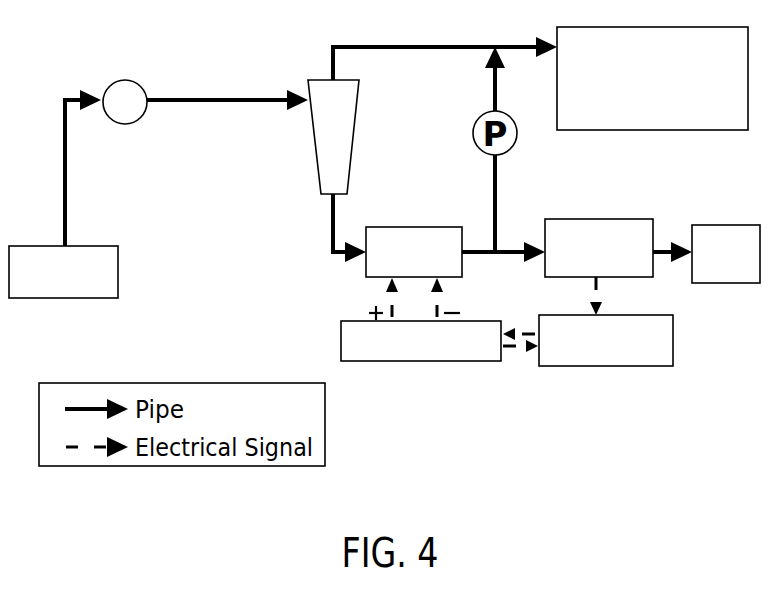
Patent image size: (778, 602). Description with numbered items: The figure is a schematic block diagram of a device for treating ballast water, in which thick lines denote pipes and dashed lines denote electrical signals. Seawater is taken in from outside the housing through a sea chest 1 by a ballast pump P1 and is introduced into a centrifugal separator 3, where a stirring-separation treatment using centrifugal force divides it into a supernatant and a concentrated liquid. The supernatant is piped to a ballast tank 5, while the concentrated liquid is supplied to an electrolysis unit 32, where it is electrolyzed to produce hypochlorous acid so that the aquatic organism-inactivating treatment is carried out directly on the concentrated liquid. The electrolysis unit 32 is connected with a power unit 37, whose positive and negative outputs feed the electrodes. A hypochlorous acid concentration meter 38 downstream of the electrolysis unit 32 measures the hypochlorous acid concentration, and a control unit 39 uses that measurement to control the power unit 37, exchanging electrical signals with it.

The sea chest 1 is at (61, 299).
The ballast pump P1 is at (127, 124).
The centrifugal separator 3 is at (353, 140).
The electrolysis unit 32 is at (408, 227).
The power unit 37 is at (423, 361).
The hypochlorous acid concentration meter 38 is at (568, 219).
The control unit 39 is at (598, 366).
The ballast tank 5 is at (678, 130).